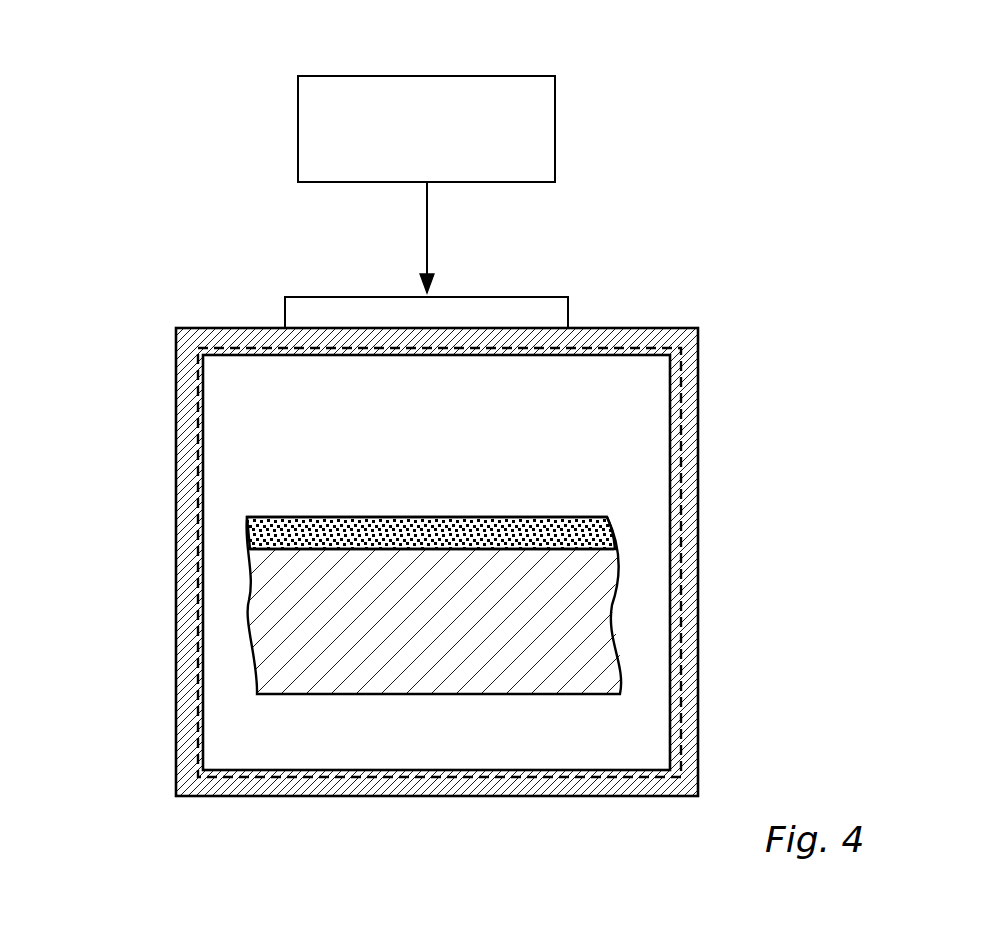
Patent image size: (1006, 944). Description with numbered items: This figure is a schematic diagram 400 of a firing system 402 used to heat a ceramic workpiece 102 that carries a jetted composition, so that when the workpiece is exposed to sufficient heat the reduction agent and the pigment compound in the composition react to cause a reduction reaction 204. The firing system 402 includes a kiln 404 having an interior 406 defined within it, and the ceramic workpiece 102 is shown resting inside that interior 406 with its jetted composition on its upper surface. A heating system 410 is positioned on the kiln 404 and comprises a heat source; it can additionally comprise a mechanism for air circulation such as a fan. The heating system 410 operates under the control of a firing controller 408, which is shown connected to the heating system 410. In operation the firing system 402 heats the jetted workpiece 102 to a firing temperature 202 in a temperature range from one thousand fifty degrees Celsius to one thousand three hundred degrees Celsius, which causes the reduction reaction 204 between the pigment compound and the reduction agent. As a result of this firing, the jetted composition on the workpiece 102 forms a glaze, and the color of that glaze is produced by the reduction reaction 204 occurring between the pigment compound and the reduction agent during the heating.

The schematic diagram 400 is at (870, 180).
The firing system 402 is at (807, 721).
The kiln 404 is at (630, 328).
The interior 406 is at (640, 432).
The firing controller 408 is at (555, 142).
The heating system 410 is at (307, 297).
The ceramic workpiece 102 is at (633, 517).
The firing temperature 202 is at (197, 682).
The reduction reaction 204 is at (423, 507).